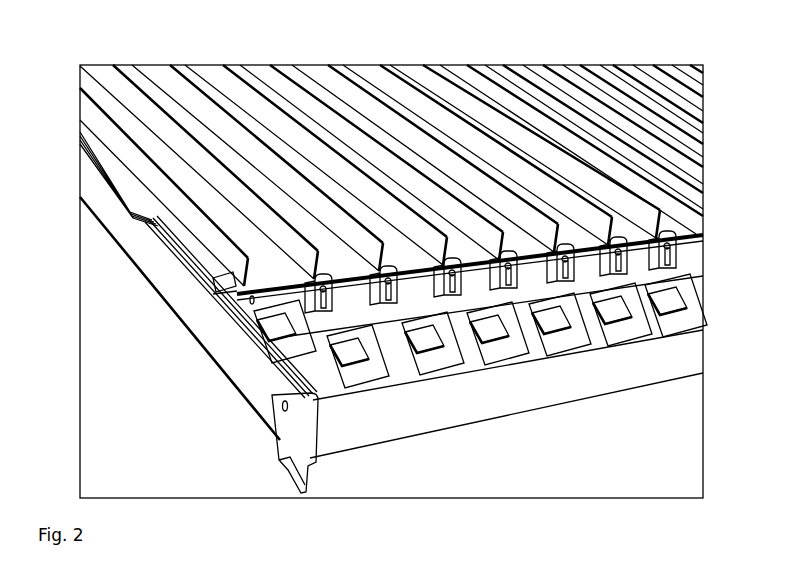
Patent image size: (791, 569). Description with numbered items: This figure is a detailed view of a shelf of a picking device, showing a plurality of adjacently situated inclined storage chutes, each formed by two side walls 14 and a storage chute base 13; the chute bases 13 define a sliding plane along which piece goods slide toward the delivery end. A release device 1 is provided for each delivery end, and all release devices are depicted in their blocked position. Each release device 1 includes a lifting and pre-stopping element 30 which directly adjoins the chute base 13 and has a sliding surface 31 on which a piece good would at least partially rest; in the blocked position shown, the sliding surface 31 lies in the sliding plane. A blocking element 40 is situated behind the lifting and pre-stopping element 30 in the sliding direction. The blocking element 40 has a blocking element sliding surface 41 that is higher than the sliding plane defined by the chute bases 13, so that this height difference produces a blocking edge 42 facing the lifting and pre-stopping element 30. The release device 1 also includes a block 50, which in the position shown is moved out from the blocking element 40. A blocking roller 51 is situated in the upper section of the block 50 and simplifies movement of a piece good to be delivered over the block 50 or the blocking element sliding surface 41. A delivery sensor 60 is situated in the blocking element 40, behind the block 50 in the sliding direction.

The release device 1 is at (418, 398).
The storage chute base 13 is at (92, 90).
The side wall 14 is at (137, 163).
The lifting and pre-stopping element 30 is at (253, 313).
The sliding surface 31 is at (253, 291).
The blocking element 40 is at (385, 375).
The blocking element sliding surface 41 is at (290, 390).
The blocking edge 42 is at (270, 323).
The block 50 is at (332, 318).
The blocking roller 51 is at (285, 292).
The delivery sensor 60 is at (352, 358).